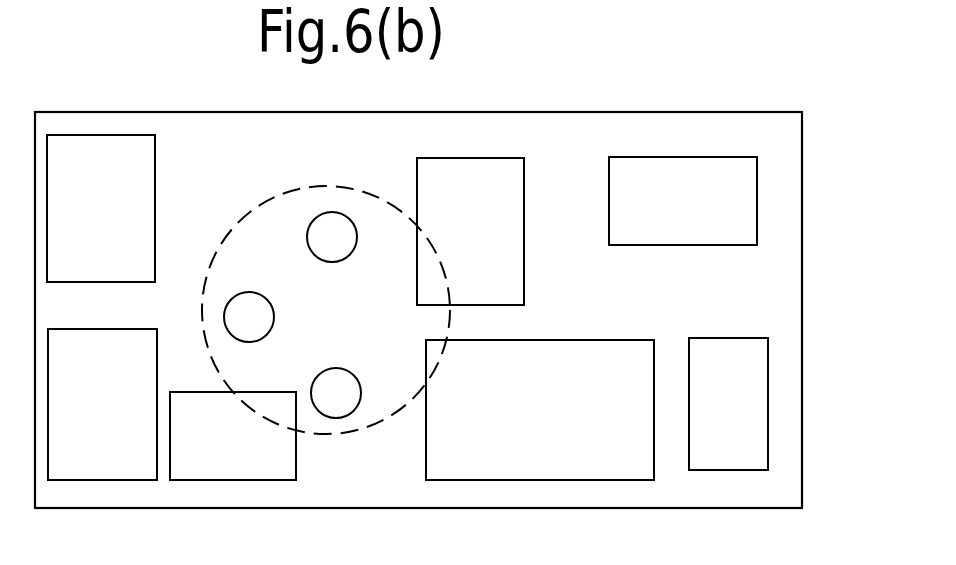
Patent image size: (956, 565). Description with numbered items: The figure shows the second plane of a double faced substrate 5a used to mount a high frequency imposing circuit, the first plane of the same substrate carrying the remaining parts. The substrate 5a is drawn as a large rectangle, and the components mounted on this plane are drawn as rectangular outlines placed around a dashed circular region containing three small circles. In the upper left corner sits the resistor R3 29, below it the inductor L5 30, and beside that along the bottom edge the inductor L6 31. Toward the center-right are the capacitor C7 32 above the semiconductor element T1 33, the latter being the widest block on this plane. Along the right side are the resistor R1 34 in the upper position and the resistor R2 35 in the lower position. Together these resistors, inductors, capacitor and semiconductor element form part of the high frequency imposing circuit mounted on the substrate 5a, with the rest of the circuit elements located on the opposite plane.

The double faced substrate 5a is at (783, 155).
The resistor R3 29 is at (101, 208).
The inductor L5 30 is at (102, 404).
The inductor L6 31 is at (233, 436).
The capacitor C7 32 is at (470, 231).
The semiconductor element T1 33 is at (540, 410).
The resistor R1 34 is at (683, 201).
The resistor R2 35 is at (728, 404).